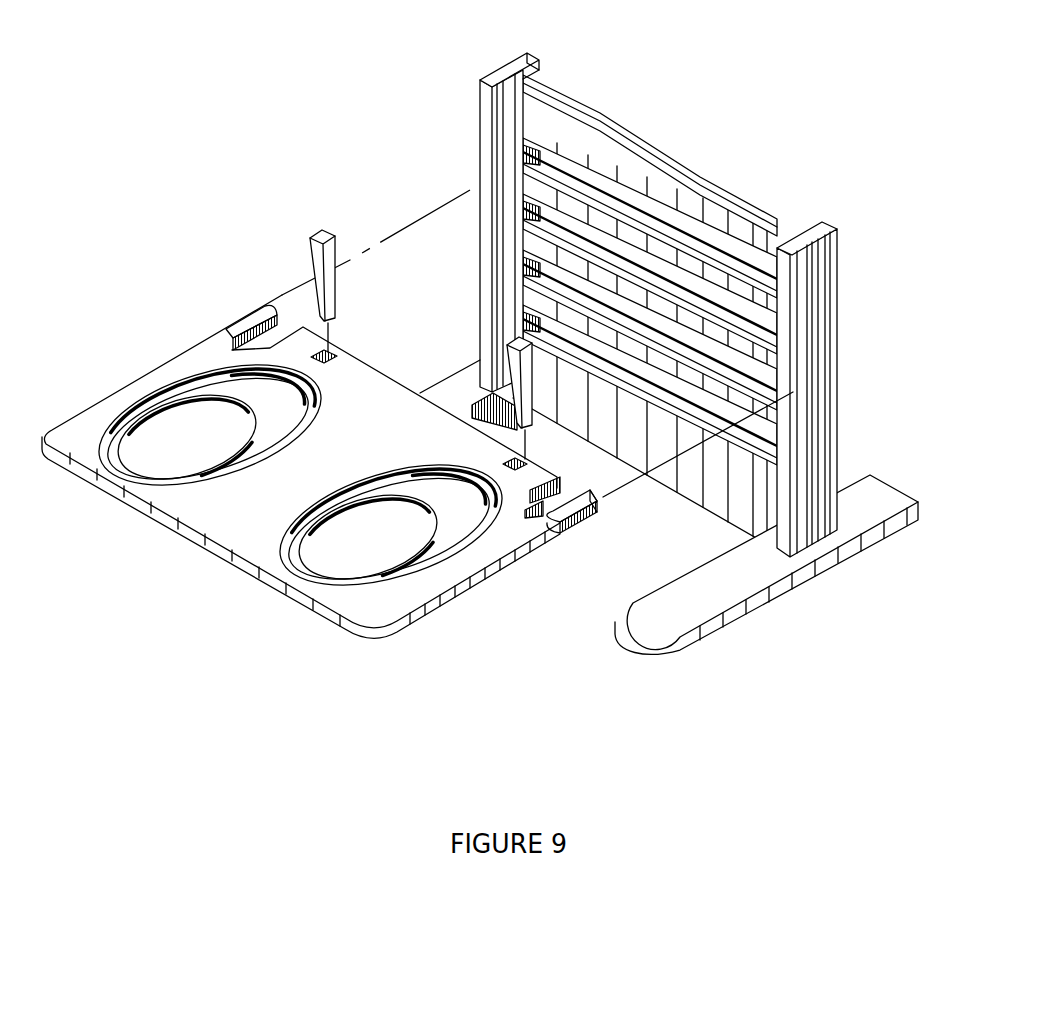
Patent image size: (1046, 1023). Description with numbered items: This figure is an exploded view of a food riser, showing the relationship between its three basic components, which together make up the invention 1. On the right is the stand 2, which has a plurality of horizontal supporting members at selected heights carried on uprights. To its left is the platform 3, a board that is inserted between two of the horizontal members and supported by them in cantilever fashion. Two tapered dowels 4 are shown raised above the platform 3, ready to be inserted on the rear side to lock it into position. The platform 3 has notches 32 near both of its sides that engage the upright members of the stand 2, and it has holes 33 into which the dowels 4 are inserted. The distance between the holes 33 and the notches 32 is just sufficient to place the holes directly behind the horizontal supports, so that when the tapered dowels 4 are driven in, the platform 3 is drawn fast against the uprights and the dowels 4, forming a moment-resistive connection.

The invention 1 is at (502, 353).
The stand 2 is at (856, 268).
The platform 3 is at (217, 553).
The dowels 4 is at (310, 252).
The notches 32 is at (549, 510).
The holes 33 is at (337, 352).